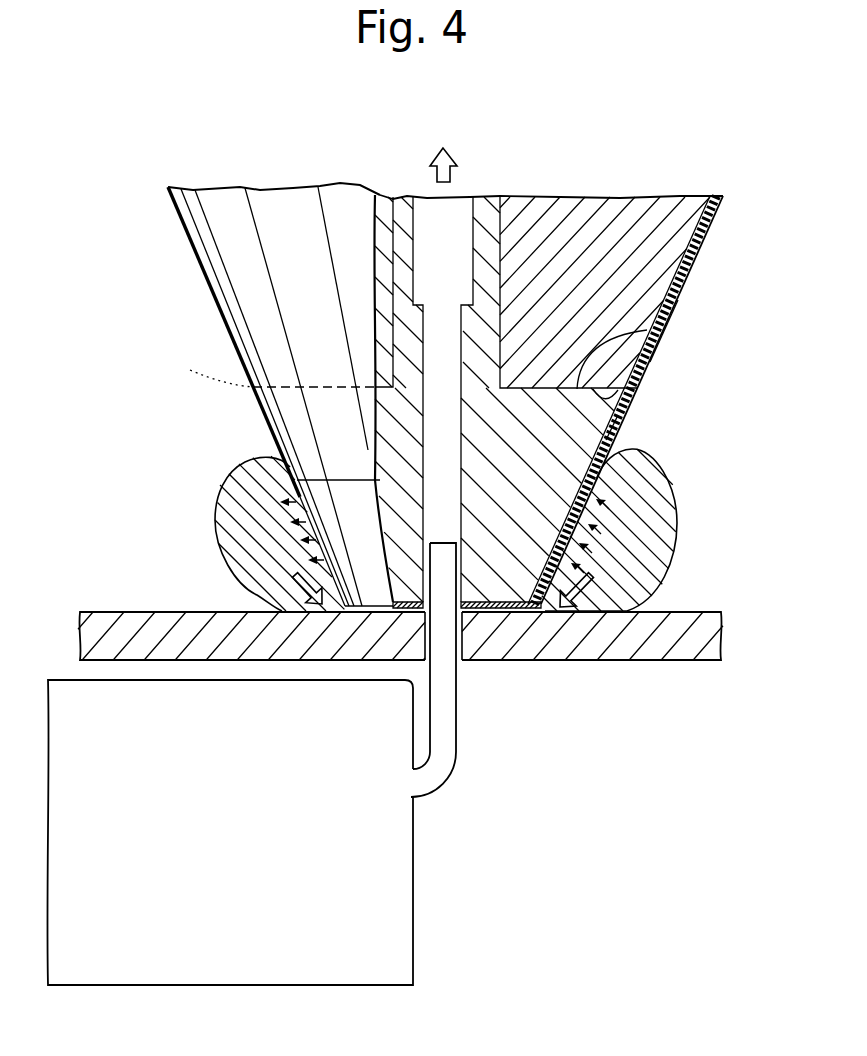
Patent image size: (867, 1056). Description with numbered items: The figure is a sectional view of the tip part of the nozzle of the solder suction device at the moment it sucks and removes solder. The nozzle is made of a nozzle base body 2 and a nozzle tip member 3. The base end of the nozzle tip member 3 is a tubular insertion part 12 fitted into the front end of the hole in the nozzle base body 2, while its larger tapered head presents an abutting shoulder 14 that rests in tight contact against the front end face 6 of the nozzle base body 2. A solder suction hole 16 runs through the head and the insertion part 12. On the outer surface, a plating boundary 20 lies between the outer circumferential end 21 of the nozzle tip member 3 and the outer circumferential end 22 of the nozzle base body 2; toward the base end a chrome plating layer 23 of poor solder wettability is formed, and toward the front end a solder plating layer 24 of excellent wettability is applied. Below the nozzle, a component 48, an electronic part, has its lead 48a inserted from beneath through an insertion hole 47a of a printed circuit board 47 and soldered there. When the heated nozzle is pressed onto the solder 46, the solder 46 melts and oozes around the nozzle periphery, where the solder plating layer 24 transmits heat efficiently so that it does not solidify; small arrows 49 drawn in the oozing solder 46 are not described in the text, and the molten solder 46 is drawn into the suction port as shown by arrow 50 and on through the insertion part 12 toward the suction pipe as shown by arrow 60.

The arrow 60 is at (432, 178).
The insertion part 12 is at (500, 262).
The nozzle base body 2 is at (673, 255).
The abutting shoulder 14 is at (647, 330).
The chrome plating layer 23 is at (654, 350).
The outer circumferential end of the nozzle base body 22 is at (665, 390).
The solder suction hole 16 is at (423, 427).
The plating boundary 20 is at (320, 480).
The solder 46 is at (215, 500).
The flow arrows 49 is at (300, 540).
The arrow 50 is at (300, 598).
The front end face of the nozzle base body 6 is at (610, 407).
The nozzle tip member 3 is at (607, 425).
The solder plating layer 24 is at (583, 583).
The printed circuit board 47 is at (597, 661).
The insertion hole 47a is at (448, 645).
The outer circumferential end of the nozzle tip member 21 is at (545, 612).
The component 48 is at (275, 985).
The lead 48a is at (452, 747).